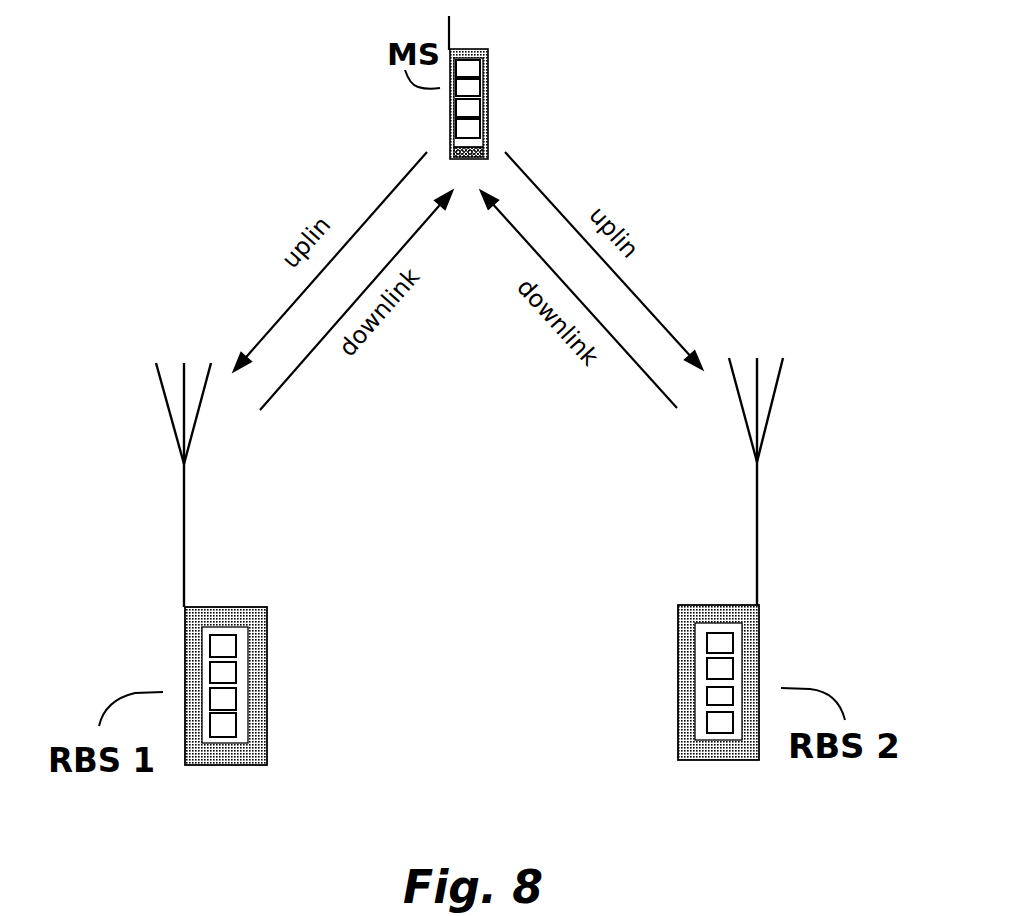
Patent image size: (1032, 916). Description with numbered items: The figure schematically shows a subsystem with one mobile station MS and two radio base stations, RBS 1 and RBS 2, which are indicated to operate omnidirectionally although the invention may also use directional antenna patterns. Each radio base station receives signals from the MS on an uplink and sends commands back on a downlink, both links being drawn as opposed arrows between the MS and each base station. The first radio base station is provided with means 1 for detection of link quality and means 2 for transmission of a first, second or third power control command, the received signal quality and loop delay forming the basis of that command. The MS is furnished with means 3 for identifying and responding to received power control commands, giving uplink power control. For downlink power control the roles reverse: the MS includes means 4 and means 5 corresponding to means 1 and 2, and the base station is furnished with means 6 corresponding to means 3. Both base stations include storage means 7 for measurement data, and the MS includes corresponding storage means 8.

The means for detection of link quality 1 is at (236, 645).
The means for transmission of a power control command 2 is at (236, 698).
The means for identifying and responding to received power control commands 3 is at (470, 68).
The means for detection of link quality 4 is at (470, 88).
The means for transmission of a power control command 5 is at (470, 109).
The means for identifying and responding to received power control commands 6 is at (236, 672).
The storage means 7 is at (236, 724).
The storage means 8 is at (470, 130).